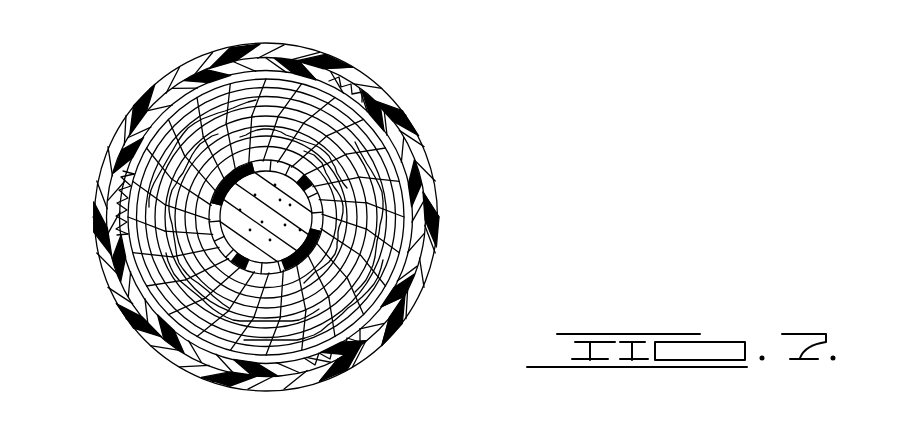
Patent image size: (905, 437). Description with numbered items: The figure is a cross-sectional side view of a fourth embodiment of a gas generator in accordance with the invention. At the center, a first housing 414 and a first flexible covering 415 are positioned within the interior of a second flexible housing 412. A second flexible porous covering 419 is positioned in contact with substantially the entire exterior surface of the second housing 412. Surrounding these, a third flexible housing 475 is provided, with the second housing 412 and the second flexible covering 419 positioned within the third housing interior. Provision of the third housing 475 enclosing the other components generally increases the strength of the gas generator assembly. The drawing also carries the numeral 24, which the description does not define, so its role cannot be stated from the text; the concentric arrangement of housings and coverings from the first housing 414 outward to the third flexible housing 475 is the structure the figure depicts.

The cable 24 is at (403, 315).
The second flexible housing 412 is at (112, 298).
The third flexible housing 475 is at (187, 80).
The second flexible porous covering 419 is at (133, 153).
The first flexible covering 415 is at (383, 214).
The first housing 414 is at (313, 210).